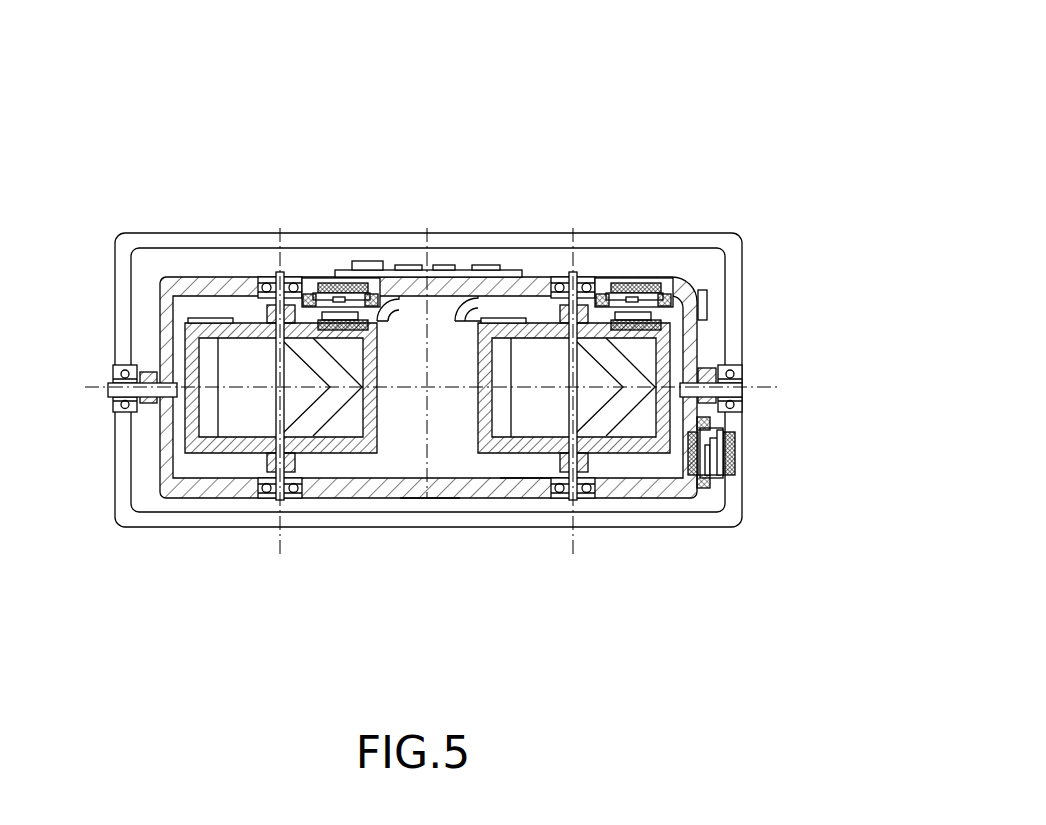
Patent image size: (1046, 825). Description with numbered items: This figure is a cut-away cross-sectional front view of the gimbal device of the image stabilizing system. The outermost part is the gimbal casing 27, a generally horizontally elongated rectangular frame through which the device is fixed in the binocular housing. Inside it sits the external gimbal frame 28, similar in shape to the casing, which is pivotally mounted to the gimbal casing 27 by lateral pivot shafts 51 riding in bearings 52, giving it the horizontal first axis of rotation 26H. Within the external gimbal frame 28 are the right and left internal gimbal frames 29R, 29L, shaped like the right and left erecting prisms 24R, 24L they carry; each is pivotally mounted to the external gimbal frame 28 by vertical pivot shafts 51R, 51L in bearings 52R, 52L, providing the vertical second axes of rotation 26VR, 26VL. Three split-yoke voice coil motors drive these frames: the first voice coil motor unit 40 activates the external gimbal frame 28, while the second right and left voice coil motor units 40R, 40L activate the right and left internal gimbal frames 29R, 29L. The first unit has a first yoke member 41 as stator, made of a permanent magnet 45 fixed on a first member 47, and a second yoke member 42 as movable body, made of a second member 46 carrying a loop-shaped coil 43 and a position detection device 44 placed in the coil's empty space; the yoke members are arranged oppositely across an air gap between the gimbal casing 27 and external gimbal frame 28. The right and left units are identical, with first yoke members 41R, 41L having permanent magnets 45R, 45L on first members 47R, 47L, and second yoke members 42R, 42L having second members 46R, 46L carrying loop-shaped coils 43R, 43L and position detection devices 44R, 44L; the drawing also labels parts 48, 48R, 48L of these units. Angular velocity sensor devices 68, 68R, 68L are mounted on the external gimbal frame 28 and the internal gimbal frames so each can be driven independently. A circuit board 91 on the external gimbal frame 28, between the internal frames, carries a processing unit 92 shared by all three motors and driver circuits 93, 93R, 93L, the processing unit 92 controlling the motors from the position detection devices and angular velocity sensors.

The first voice coil motor unit 40 is at (803, 521).
The second left voice coil motor unit 40L is at (319, 118).
The second right voice coil motor unit 40R is at (734, 150).
The first yoke member 41 is at (812, 433).
The first yoke member 41L is at (460, 116).
The first yoke member 41R is at (765, 176).
The second yoke member 42 is at (658, 587).
The second yoke member 42L is at (158, 150).
The second yoke member 42R is at (549, 150).
The loop-shaped coil 43 is at (710, 482).
The loop-shaped coil 43L is at (322, 289).
The loop-shaped coil 43R is at (612, 289).
The position detection device 44 is at (728, 490).
The position detection device 44L is at (362, 279).
The position detection device 44R is at (667, 280).
The permanent magnet 45 is at (712, 428).
The permanent magnet 45L is at (360, 281).
The permanent magnet 45R is at (677, 280).
The second member 46 is at (696, 482).
The second member 46L is at (336, 283).
The second member 46R is at (634, 283).
The first member 47 is at (734, 458).
The first member 47L is at (370, 300).
The first member 47R is at (700, 288).
The yoke 48 is at (703, 489).
The left yoke 48L is at (306, 297).
The right yoke 48R is at (600, 297).
The lateral pivot shafts 51 is at (112, 382).
The vertical pivot shafts 51L is at (276, 278).
The vertical pivot shafts 51R is at (567, 277).
The bearings 52 is at (113, 370).
The bearings 52L is at (264, 280).
The bearings 52R is at (557, 277).
The angular velocity sensor device 68 is at (708, 303).
The angular velocity sensor device 68L is at (167, 314).
The angular velocity sensor device 68R is at (458, 481).
The erecting prism 24L is at (222, 455).
The erecting prism 24R is at (503, 455).
The horizontal first axis of rotation 26H is at (750, 397).
The vertical second axis of rotation 26VL is at (280, 558).
The vertical second axis of rotation 26VR is at (573, 558).
The gimbal casing 27 is at (153, 527).
The external gimbal frame 28 is at (140, 484).
The left internal gimbal frame 29L is at (358, 480).
The right internal gimbal frame 29R is at (488, 481).
The circuit board 91 is at (430, 262).
The processing unit 92 is at (366, 261).
The driver circuit 93 is at (406, 265).
The driver circuit 93L is at (440, 265).
The driver circuit 93R is at (468, 265).